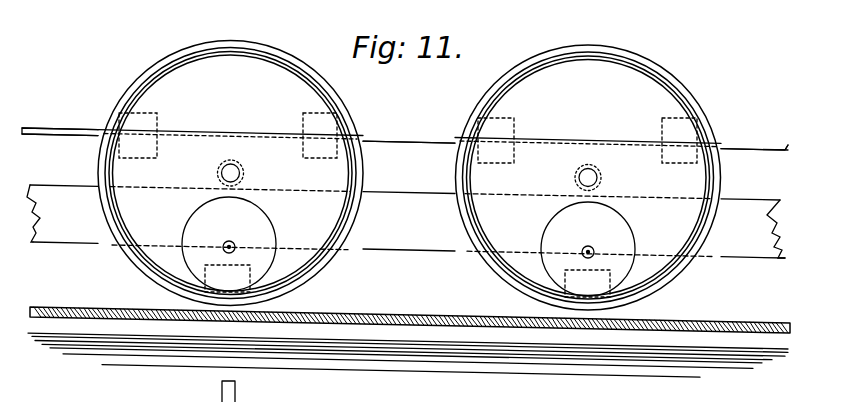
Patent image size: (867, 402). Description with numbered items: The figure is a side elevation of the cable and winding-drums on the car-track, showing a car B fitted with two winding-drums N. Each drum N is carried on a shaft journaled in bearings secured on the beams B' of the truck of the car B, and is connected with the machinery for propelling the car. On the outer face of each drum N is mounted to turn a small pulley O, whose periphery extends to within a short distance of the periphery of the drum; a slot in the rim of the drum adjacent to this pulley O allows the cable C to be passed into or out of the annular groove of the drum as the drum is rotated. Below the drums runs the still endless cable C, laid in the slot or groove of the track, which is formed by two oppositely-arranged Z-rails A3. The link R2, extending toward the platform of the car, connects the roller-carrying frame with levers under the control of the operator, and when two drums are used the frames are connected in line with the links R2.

The winding-drum N is at (223, 42).
The car B is at (405, 119).
The beams B' is at (406, 221).
The pulley O is at (262, 234).
The link R2 is at (60, 114).
The endless cable C is at (428, 318).
The Z-rails A3 is at (406, 336).